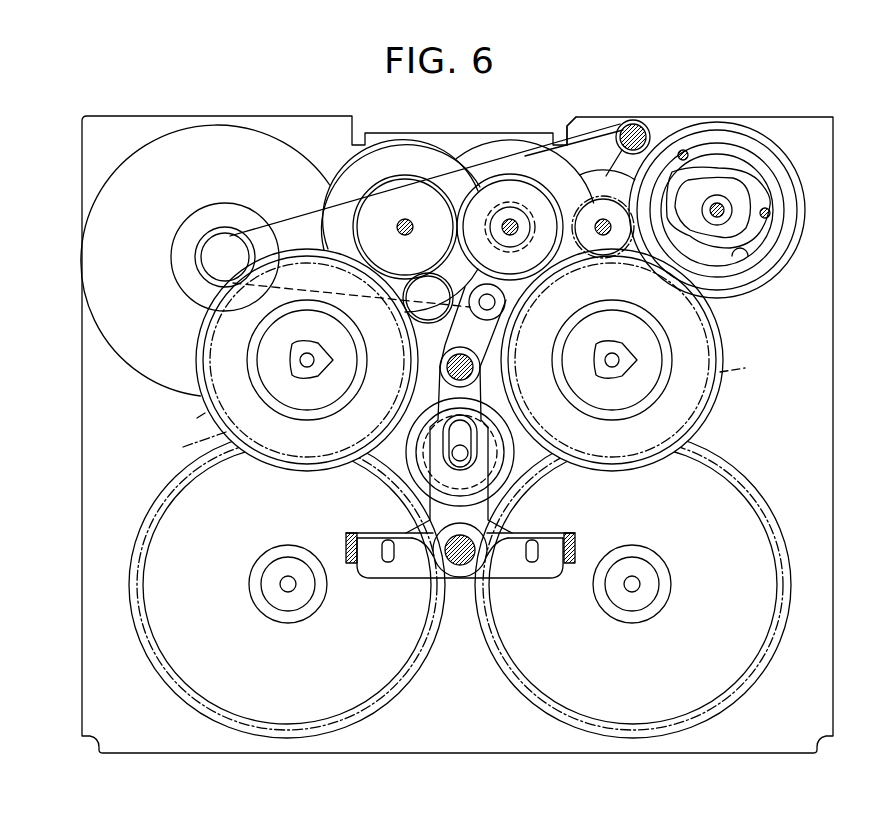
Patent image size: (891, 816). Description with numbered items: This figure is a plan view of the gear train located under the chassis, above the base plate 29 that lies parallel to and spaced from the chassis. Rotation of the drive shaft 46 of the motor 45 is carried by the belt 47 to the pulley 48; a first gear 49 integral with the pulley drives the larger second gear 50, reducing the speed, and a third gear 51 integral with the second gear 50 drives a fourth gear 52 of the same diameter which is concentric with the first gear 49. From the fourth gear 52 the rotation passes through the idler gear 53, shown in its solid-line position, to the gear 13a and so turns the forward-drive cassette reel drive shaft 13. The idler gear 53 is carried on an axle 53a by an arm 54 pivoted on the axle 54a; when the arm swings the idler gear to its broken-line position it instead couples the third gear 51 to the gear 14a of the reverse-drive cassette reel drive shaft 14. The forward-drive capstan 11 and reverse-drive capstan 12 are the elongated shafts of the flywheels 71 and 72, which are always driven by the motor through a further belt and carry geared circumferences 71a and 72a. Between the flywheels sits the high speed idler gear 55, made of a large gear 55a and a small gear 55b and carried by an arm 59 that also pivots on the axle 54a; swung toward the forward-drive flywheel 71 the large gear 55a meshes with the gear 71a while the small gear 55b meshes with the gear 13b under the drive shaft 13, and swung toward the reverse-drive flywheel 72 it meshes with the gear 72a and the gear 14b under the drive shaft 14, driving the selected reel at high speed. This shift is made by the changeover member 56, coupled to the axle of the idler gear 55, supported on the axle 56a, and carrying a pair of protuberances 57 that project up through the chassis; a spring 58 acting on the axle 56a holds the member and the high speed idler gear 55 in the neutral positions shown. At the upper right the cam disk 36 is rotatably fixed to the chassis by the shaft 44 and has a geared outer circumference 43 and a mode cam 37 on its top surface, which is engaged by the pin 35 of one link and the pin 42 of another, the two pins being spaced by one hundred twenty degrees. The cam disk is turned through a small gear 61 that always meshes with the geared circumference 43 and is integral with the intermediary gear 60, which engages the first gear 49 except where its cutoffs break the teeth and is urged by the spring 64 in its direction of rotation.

The forward-drive capstan 11 is at (640, 584).
The reverse-drive capstan 12 is at (280, 588).
The forward-drive cassette reel drive shaft 13 is at (622, 372).
The gear 13a is at (724, 398).
The gear 13b is at (752, 367).
The reverse-drive cassette reel drive shaft 14 is at (282, 375).
The gear 14a is at (199, 417).
The gear 14b is at (188, 445).
The base plate 29 is at (88, 448).
The pin 35 is at (769, 216).
The cam disk 36 is at (810, 200).
The mode cam 37 is at (748, 256).
The pin 42 is at (682, 150).
The geared outer circumference 43 is at (800, 168).
The shaft 44 is at (714, 207).
The motor 45 is at (236, 142).
The drive shaft 46 is at (219, 256).
The belt 47 is at (285, 218).
The pulley 48 is at (530, 142).
The first gear 49 is at (522, 200).
The second gear 50 is at (425, 157).
The third gear 51 is at (394, 190).
The fourth gear 52 is at (492, 162).
The idler gear 53 is at (425, 322).
The axle 53a is at (572, 352).
The arm 54 is at (444, 367).
The axle 54a is at (330, 373).
The high speed idler gear 55 is at (395, 477).
The large gear 55a is at (528, 450).
The small gear 55b is at (492, 468).
The changeover member 56 is at (432, 490).
The axle 56a is at (462, 566).
The protuberances 57 is at (388, 556).
The spring 58 is at (568, 534).
The arm 59 is at (418, 405).
The intermediary gear 60 is at (603, 162).
The small gear 61 is at (604, 212).
The spring 64 is at (581, 120).
The forward-drive flywheel 71 is at (720, 484).
The geared circumference 71a is at (775, 521).
The reverse-drive flywheel 72 is at (182, 506).
The geared circumference 72a is at (146, 532).